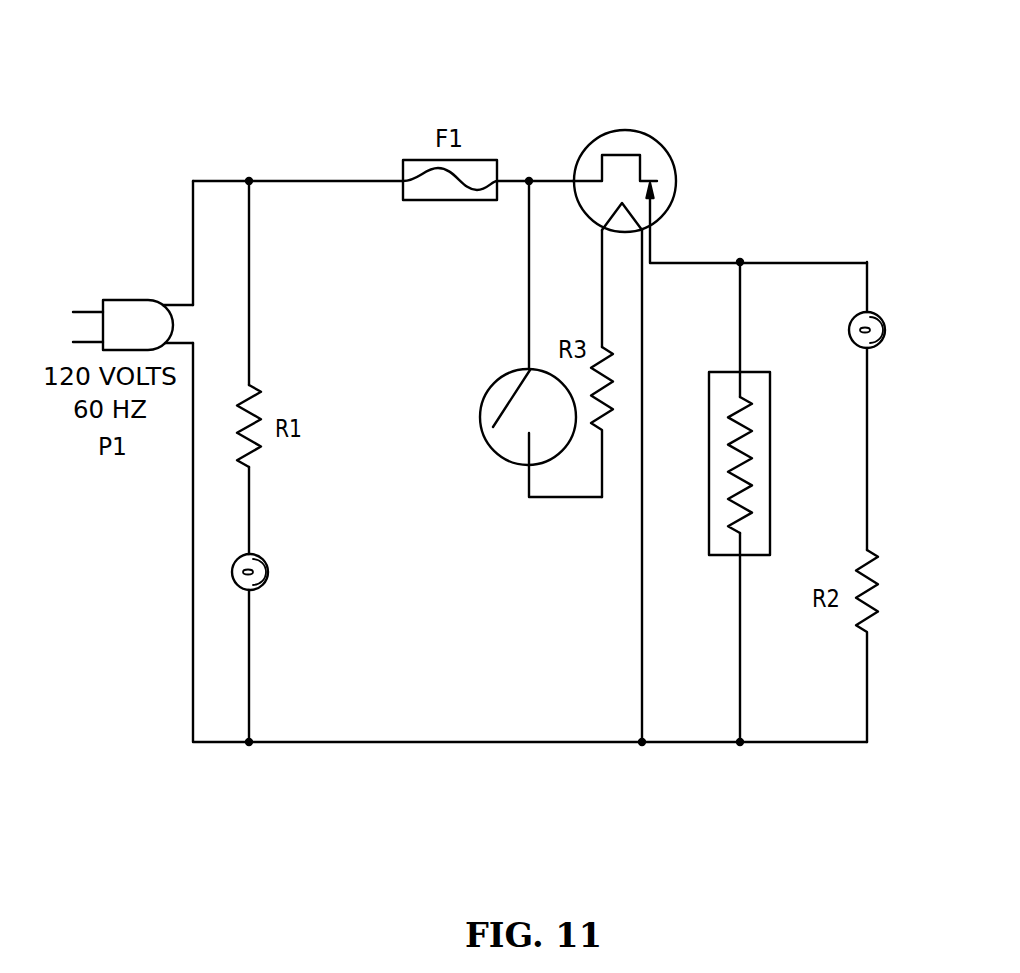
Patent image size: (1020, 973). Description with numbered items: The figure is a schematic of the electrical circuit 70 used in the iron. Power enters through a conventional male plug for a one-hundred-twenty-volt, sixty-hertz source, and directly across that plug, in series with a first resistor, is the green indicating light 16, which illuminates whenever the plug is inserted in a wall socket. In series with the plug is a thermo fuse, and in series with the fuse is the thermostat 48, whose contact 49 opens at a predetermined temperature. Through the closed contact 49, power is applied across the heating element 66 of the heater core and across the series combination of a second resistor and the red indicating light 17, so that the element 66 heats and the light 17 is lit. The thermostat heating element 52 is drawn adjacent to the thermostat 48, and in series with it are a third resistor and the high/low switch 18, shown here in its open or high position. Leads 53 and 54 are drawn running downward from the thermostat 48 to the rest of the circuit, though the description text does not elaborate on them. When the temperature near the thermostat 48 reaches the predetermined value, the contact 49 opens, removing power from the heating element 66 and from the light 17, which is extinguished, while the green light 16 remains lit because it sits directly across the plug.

The electrical circuit 70 is at (518, 85).
The thermostat 48 is at (672, 140).
The contact 49 is at (658, 171).
The thermostat heating element 52 is at (628, 212).
The conductor lead 53 is at (643, 290).
The conductor lead 54 is at (600, 282).
The red indicating light 17 is at (873, 317).
The heating element 66 is at (775, 424).
The green indicating light 16 is at (260, 590).
The high/low switch 18 is at (510, 462).